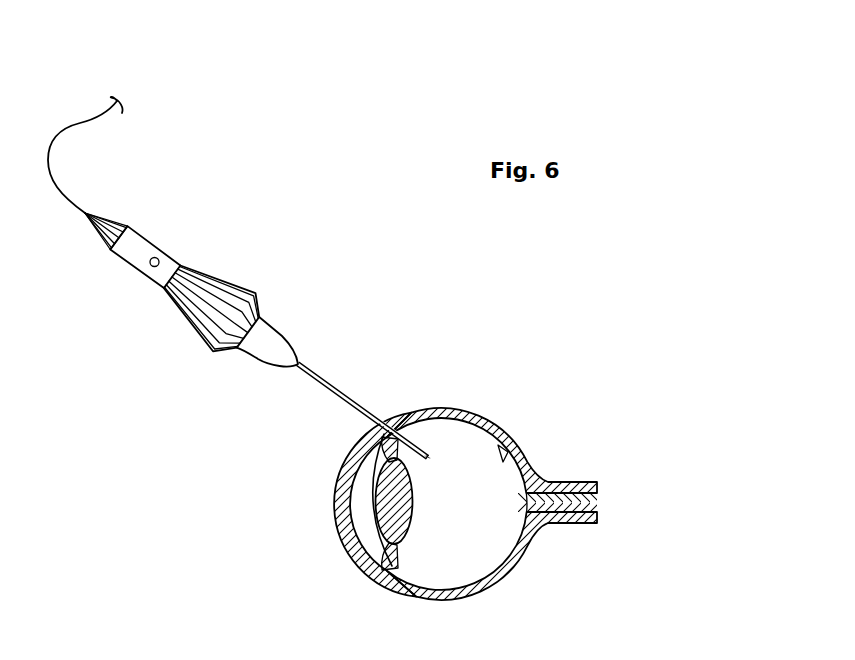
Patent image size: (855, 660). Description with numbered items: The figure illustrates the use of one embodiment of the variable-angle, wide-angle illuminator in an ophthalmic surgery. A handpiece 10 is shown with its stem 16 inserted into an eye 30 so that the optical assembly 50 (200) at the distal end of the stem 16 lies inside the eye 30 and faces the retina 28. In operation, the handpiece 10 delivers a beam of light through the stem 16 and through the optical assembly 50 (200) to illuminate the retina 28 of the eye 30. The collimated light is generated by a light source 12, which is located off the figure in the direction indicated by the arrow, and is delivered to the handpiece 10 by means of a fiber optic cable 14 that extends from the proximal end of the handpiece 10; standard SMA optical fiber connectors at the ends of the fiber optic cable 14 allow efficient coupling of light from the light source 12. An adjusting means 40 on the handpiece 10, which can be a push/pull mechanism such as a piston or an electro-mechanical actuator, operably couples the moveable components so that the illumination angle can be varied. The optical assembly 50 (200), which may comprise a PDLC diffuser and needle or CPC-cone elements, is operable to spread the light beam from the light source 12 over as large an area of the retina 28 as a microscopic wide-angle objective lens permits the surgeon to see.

The handpiece 10 is at (213, 286).
The light source 12 is at (132, 85).
The fiber optic cable 14 is at (50, 170).
The stem 16 is at (332, 385).
The retina 28 is at (517, 450).
The eye 30 is at (558, 360).
The adjusting means 40 is at (159, 260).
The optical assembly 200 is at (428, 457).
The optical assembly 50 is at (427, 457).